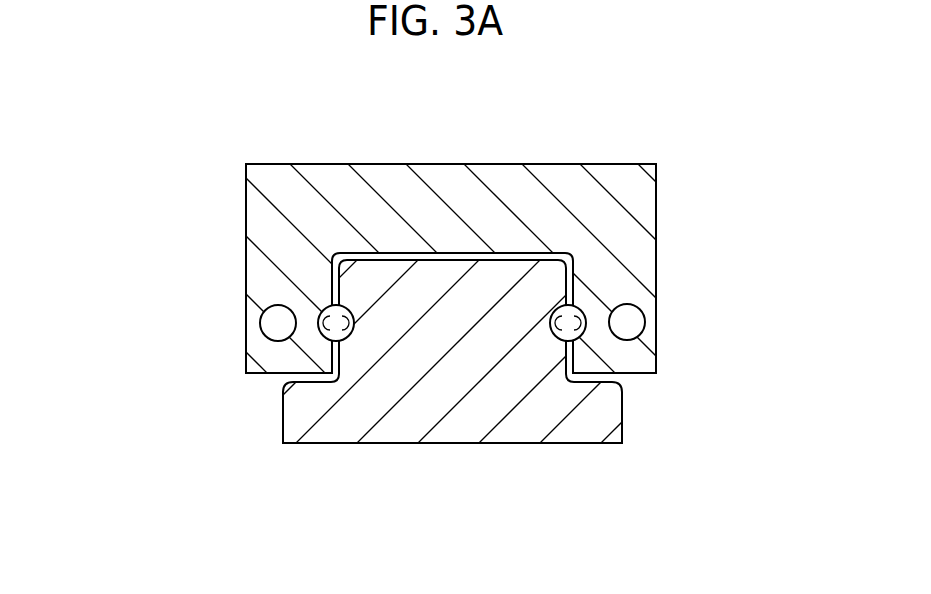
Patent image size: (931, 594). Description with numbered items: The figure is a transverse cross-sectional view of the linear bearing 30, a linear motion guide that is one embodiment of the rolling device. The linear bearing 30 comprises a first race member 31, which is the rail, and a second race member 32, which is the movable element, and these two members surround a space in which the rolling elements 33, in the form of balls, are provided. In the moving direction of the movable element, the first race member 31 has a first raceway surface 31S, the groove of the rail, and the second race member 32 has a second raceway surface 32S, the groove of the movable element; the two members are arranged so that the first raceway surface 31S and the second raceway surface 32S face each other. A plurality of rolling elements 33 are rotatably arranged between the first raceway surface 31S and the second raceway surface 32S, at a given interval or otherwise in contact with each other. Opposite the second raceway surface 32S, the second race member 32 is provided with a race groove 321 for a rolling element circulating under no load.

The linear bearing 30 is at (423, 303).
The first race member 31 is at (518, 430).
The first raceway surface 31S is at (341, 338).
The second race member 32 is at (325, 178).
The second raceway surface 32S is at (328, 331).
The race groove 321 is at (625, 335).
The rolling elements 33 is at (622, 413).